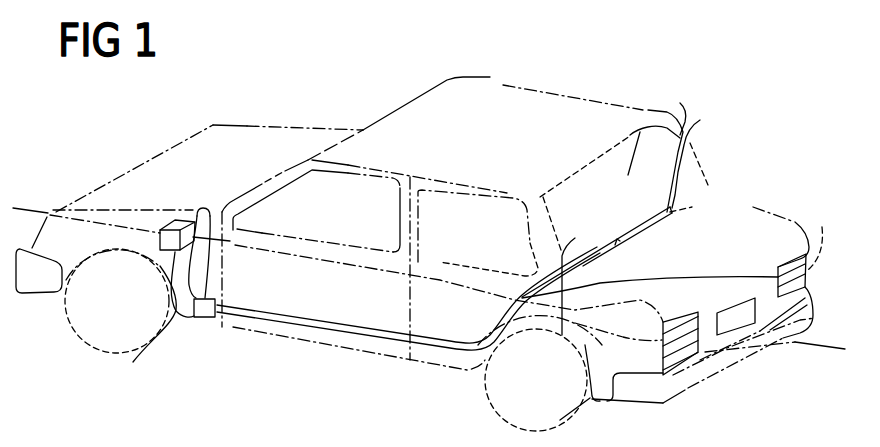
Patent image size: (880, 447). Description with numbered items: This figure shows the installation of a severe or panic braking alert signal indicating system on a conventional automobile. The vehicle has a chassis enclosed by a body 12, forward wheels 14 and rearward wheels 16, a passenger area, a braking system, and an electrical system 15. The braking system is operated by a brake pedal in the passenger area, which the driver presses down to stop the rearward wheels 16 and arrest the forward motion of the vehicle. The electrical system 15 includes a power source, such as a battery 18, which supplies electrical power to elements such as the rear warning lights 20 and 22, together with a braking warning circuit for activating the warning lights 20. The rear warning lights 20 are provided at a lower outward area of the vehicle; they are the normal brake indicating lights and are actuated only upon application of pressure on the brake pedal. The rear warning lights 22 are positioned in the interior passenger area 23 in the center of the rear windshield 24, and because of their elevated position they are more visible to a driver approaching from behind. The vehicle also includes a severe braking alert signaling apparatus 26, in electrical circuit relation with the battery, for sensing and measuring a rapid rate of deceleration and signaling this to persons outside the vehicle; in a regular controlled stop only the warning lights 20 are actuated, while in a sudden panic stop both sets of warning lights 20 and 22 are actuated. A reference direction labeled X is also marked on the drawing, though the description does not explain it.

The body 12 is at (497, 83).
The forward wheels 14 is at (73, 327).
The electrical system 15 is at (202, 317).
The rearward wheels 16 is at (498, 407).
The battery 18 is at (167, 255).
The rear warning lights 20 is at (822, 226).
The rear warning lights 22 is at (750, 206).
The interior passenger area 23 is at (642, 128).
The rear windshield 24 is at (678, 100).
The severe braking alert signaling apparatus 26 is at (700, 120).
The longitudinal axis X is at (823, 347).